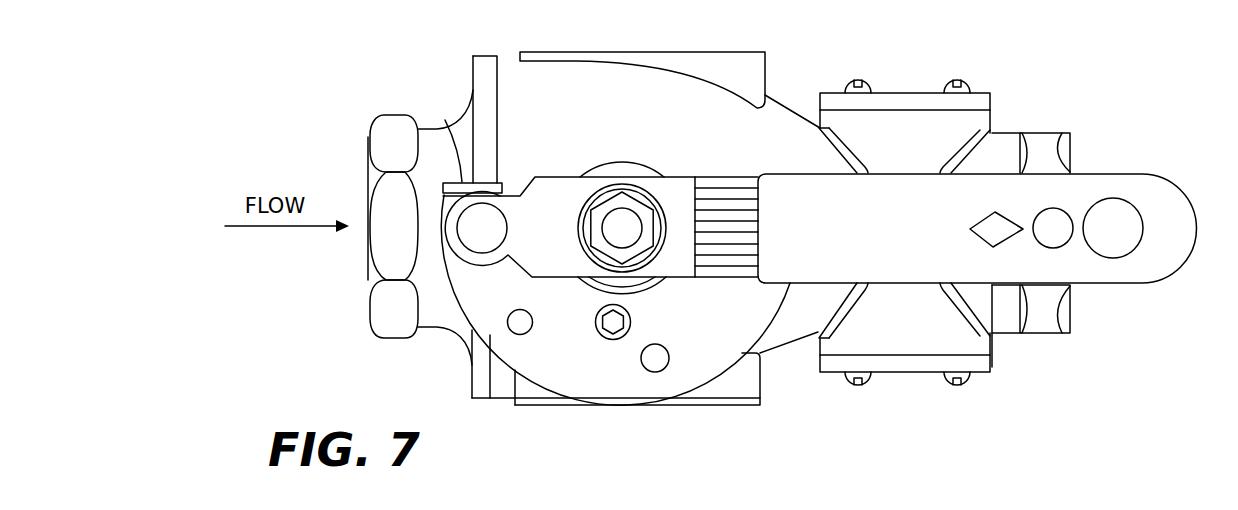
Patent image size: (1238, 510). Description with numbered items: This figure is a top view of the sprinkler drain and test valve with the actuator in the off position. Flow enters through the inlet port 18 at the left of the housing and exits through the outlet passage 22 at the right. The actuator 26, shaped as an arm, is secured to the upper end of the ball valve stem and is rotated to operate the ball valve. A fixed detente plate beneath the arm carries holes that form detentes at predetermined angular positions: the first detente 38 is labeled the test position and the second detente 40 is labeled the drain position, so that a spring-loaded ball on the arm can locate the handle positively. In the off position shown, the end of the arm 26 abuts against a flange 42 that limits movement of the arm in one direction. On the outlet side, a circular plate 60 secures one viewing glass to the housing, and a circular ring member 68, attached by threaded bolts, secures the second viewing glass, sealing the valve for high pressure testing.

The inlet port 18 is at (390, 340).
The outlet passage 22 is at (1073, 312).
The actuator 26 is at (1100, 187).
The first detente 38 is at (525, 310).
The second detente 40 is at (668, 348).
The flange 42 is at (445, 120).
The circular plate 60 is at (900, 92).
The circular ring member 68 is at (893, 365).